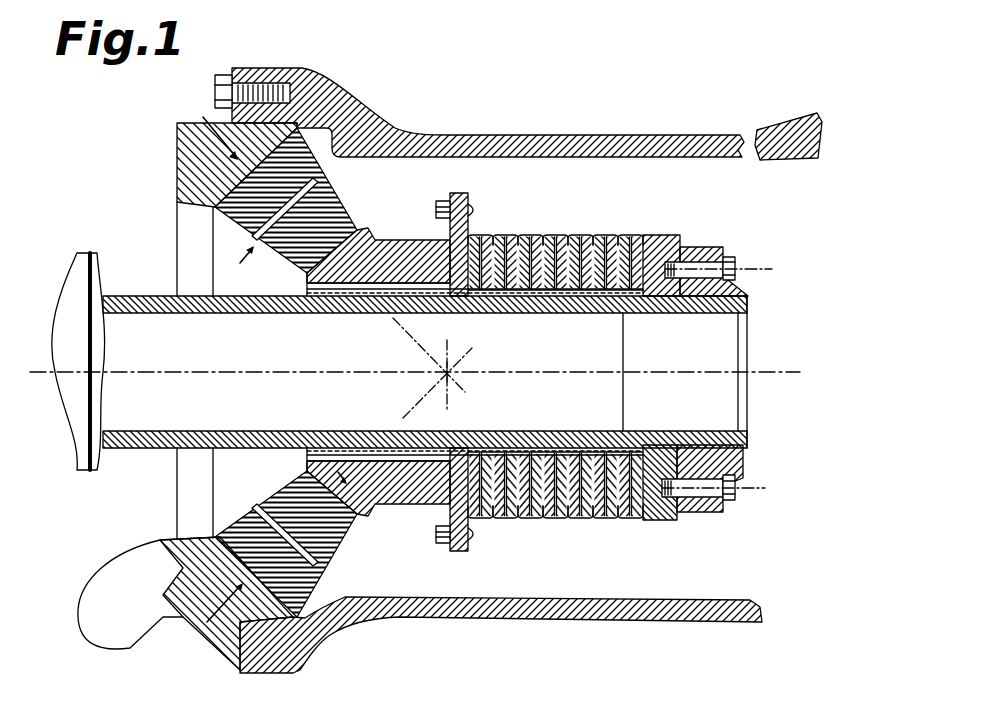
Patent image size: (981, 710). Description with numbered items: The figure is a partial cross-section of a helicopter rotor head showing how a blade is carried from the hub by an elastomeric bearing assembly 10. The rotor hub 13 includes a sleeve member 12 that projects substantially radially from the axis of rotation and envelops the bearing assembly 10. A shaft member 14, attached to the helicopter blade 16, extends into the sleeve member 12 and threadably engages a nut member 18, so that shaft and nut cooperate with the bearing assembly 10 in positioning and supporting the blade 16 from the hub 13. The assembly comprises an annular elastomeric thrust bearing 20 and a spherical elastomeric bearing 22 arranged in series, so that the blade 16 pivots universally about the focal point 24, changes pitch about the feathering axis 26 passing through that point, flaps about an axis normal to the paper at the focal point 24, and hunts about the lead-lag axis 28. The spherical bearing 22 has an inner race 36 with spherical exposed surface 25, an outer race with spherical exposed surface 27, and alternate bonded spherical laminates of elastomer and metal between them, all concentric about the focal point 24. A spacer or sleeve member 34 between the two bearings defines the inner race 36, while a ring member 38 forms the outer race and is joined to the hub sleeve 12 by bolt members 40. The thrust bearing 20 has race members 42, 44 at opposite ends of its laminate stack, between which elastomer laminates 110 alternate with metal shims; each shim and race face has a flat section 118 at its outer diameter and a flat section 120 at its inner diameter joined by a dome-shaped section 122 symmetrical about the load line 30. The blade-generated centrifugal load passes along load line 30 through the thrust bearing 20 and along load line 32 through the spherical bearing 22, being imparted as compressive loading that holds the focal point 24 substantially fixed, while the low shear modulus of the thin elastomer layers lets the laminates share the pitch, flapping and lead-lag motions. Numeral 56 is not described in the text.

The elastomeric bearing assembly 10 is at (634, 214).
The sleeve member 12 is at (388, 133).
The rotor hub 13 is at (795, 122).
The shaft member 14 is at (127, 295).
The helicopter blade 16 is at (78, 253).
The nut member 18 is at (186, 182).
The annular elastomeric thrust bearing 20 is at (544, 216).
The spherical elastomeric bearing 22 is at (282, 375).
The pivot or focal point 24 is at (443, 375).
The spherical exposed surface of inner race 25 is at (353, 212).
The feathering axis 26 is at (207, 338).
The spherical exposed surface of outer race 27 is at (183, 156).
The lead-lag axis 28 is at (450, 348).
The load line 30 is at (572, 233).
The load line 32 is at (393, 304).
The spacer or sleeve member 34 is at (395, 486).
The inner race 36 is at (322, 290).
The ring member 38 is at (244, 70).
The bolt members 40 is at (214, 92).
The race member 42 is at (678, 240).
The race member 44 is at (455, 249).
The flange bolt 56 is at (440, 212).
The elastomer laminates 110 is at (592, 298).
The flat section adjacent outer diameter 118 is at (640, 236).
The flat section adjacent inner diameter 120 is at (625, 300).
The dome-shaped section 122 is at (641, 318).